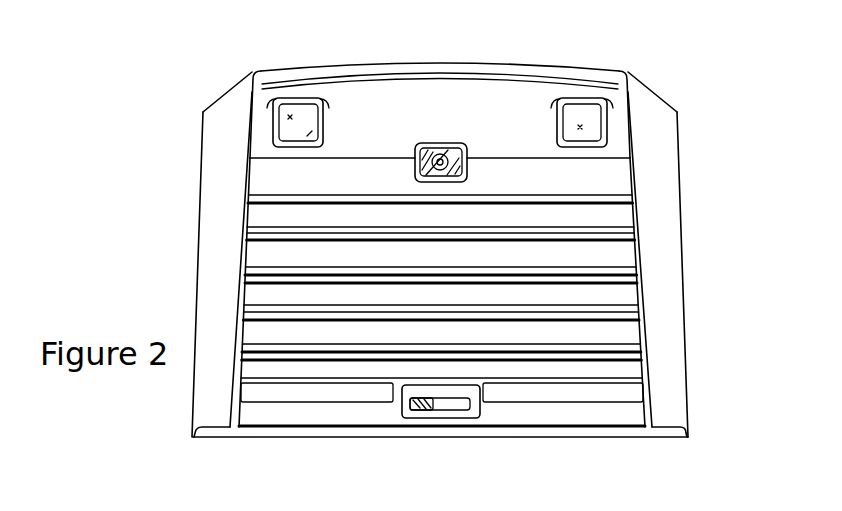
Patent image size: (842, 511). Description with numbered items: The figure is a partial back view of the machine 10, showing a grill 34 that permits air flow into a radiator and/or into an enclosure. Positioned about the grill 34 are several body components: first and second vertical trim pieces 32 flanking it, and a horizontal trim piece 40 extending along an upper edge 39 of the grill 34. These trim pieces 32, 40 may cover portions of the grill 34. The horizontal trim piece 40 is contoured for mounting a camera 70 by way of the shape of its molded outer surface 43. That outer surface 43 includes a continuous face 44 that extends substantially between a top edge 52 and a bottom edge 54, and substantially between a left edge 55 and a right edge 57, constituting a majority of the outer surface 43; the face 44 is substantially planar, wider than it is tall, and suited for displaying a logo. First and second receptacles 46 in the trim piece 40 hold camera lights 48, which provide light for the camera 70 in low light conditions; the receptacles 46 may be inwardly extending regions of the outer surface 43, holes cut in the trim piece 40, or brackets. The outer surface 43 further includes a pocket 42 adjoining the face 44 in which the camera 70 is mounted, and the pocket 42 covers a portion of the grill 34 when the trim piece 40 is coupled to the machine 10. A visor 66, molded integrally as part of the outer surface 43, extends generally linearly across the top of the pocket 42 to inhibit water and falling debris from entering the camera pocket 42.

The machine 10 is at (166, 440).
The vertical trim pieces 32 is at (201, 221).
The grill 34 is at (297, 437).
The upper edge 39 is at (616, 185).
The horizontal trim piece 40 is at (486, 72).
The pocket 42 is at (467, 158).
The outer surface 43 is at (360, 90).
The continuous face 44 is at (387, 146).
The receptacles 46 is at (323, 100).
The camera lights 48 is at (273, 143).
The top edge 52 is at (430, 52).
The bottom edge 54 is at (266, 165).
The left edge 55 is at (241, 91).
The right edge 57 is at (645, 76).
The visor 66 is at (453, 142).
The camera 70 is at (415, 172).